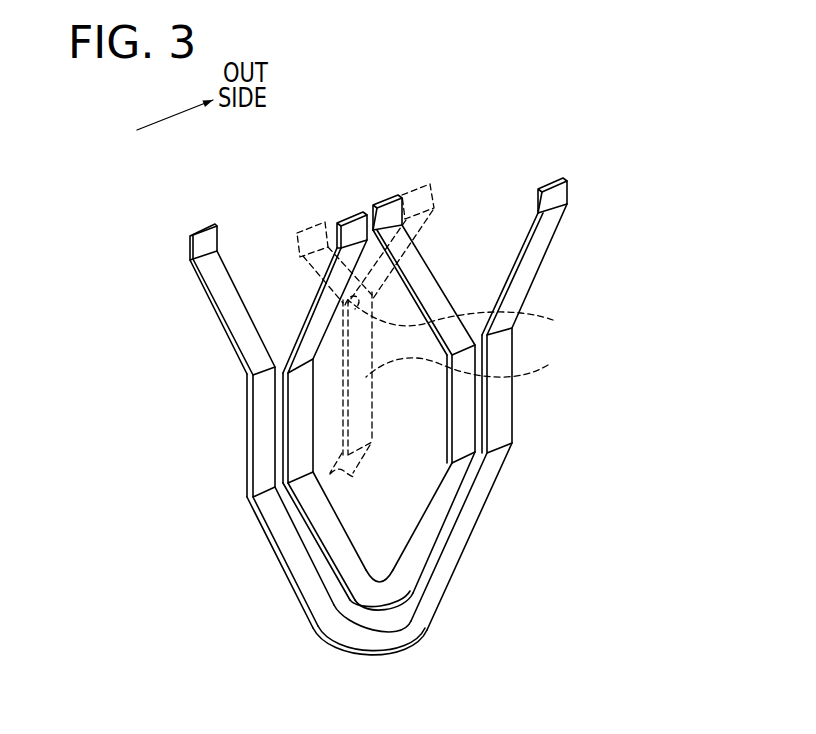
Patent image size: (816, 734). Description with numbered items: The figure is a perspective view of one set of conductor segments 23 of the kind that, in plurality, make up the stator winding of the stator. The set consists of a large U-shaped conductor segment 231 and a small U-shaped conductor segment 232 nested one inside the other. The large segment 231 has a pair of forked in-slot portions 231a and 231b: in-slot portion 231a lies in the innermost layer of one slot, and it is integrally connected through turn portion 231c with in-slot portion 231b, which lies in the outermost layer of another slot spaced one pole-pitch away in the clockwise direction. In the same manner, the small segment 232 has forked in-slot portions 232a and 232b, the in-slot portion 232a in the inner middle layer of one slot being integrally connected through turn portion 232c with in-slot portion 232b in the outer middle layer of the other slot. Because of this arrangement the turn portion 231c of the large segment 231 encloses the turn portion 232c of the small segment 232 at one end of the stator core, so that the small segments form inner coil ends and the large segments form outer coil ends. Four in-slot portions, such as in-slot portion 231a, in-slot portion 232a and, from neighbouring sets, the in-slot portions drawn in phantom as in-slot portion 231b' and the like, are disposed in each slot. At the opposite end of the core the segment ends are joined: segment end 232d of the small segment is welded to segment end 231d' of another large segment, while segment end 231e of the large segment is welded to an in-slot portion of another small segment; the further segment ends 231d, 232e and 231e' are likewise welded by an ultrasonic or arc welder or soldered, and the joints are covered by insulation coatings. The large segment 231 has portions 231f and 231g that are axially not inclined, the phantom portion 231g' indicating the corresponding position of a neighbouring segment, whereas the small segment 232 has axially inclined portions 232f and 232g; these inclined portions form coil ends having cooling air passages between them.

The set of conductor segments 23 is at (315, 636).
The large U-shaped conductor segment 231 is at (540, 273).
The in-slot portion 231a is at (263, 402).
The in-slot portion 231b is at (560, 390).
The in-slot portion 231b' is at (490, 359).
The turn portion 231c is at (370, 643).
The segment end 231d is at (148, 237).
The segment end 231d' is at (292, 219).
The segment end 231e is at (609, 191).
The segment end 231e' is at (418, 184).
The axially non-inclined portion 231f is at (297, 553).
The axially non-inclined portion 231g is at (365, 289).
The phantom position of upper inclined arm 231g' is at (486, 321).
The small U-shaped conductor segment 232 is at (457, 298).
The in-slot portion 232a is at (305, 447).
The in-slot portion 232b is at (463, 443).
The turn portion 232c is at (383, 597).
The segment end 232d is at (360, 215).
The segment end 232e is at (387, 210).
The axially inclined portion 232f is at (340, 552).
The axially inclined portion 232g is at (313, 313).